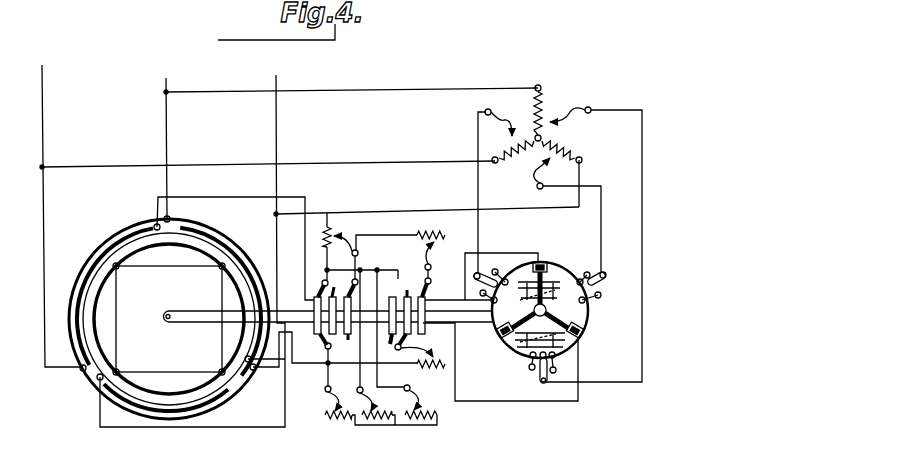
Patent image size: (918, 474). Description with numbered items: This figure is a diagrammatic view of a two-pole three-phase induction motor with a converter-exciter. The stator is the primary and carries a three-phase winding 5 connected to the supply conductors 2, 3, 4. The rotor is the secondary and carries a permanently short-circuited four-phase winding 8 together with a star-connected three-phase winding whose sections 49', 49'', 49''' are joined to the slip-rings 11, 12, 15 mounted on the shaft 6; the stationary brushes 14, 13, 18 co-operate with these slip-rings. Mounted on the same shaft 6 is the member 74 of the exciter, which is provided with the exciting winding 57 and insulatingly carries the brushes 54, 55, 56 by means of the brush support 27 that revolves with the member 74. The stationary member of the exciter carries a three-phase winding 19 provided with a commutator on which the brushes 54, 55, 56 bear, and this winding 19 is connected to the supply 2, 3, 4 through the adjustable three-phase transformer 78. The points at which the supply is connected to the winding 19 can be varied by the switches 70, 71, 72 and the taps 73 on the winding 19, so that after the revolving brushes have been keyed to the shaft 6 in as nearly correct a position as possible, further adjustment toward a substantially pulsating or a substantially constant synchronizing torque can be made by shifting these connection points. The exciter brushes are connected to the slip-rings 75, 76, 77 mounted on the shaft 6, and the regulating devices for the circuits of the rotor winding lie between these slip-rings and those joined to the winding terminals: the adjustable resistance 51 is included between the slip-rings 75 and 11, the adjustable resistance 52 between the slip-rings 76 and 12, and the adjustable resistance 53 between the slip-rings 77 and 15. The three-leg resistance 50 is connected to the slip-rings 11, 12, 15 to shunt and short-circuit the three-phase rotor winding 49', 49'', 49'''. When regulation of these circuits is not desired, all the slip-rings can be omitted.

The supply 2 is at (267, 212).
The supply 3 is at (345, 141).
The supply 4 is at (339, 245).
The three-phase winding 5 is at (92, 389).
The shaft 6 is at (188, 323).
The four-phase winding 8 is at (220, 229).
The slip-ring 11 is at (318, 338).
The slip-ring 12 is at (357, 268).
The brush 13 is at (326, 349).
The brush 14 is at (317, 285).
The slip-ring 15 is at (350, 336).
The brush 18 is at (336, 292).
The three-phase winding 19 is at (591, 309).
The brush support 27 is at (560, 318).
The star connected three-phase winding 49' is at (162, 415).
The star connected three-phase winding 49'' is at (227, 302).
The star connected three-phase winding 49''' is at (184, 281).
The three leg resistance 50 is at (381, 419).
The adjustable resistance 51 is at (333, 230).
The adjustable resistance 52 is at (411, 387).
The adjustable resistance 53 is at (411, 246).
The brush 54 is at (547, 263).
The brush 55 is at (580, 333).
The brush 56 is at (504, 339).
The exciting winding 57 is at (564, 288).
The switch 70 is at (482, 274).
The switch 71 is at (610, 275).
The switch 72 is at (543, 386).
The taps 73 is at (530, 371).
The member of the exciter 74 is at (556, 355).
The slip-ring 75 is at (390, 344).
The slip-ring 76 is at (408, 290).
The slip-ring 77 is at (431, 280).
The adjustable three-phase transformer 78 is at (560, 233).